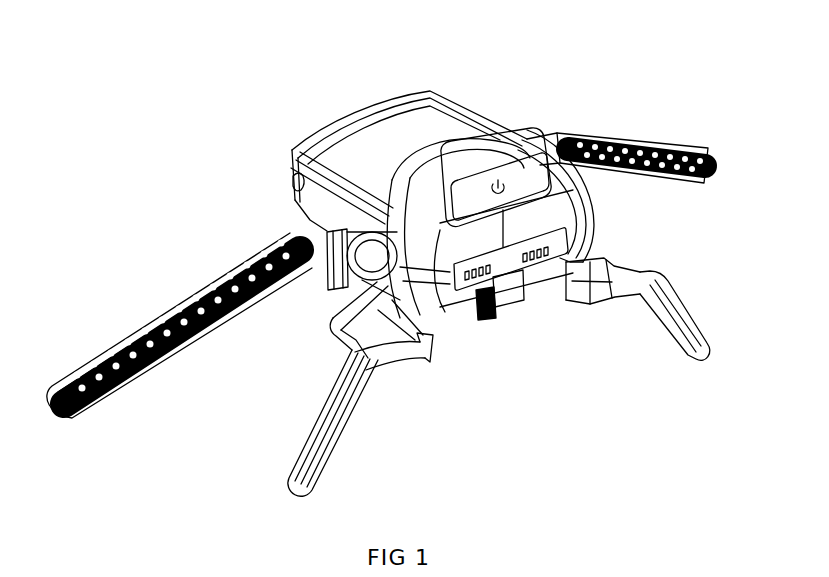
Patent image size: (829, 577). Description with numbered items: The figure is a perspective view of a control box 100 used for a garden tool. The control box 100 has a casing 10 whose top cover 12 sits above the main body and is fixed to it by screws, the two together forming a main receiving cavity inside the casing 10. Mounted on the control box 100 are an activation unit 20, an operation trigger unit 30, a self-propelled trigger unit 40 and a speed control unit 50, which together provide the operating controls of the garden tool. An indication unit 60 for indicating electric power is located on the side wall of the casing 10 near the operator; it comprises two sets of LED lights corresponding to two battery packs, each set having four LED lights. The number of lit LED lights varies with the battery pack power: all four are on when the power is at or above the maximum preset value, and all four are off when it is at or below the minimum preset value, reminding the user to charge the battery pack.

The control box 100 is at (406, 34).
The casing 10 is at (413, 120).
The top cover 12 is at (363, 138).
The activation unit 20 is at (521, 173).
The operation trigger unit 30 is at (632, 135).
The self-propelled trigger unit 40 is at (651, 309).
The speed control unit 50 is at (500, 292).
The indication unit 60 is at (610, 221).